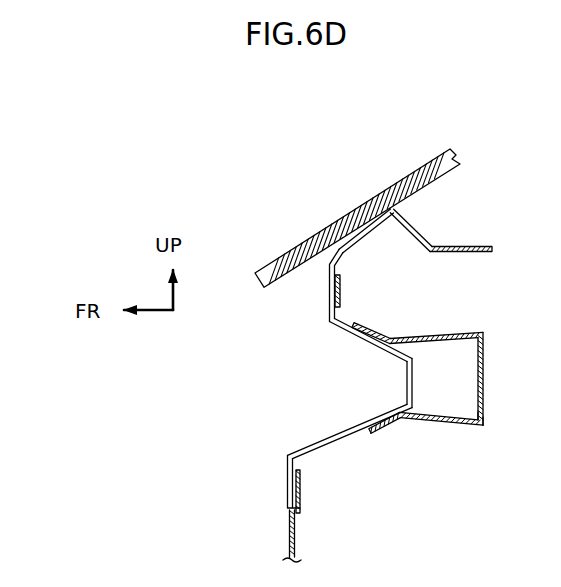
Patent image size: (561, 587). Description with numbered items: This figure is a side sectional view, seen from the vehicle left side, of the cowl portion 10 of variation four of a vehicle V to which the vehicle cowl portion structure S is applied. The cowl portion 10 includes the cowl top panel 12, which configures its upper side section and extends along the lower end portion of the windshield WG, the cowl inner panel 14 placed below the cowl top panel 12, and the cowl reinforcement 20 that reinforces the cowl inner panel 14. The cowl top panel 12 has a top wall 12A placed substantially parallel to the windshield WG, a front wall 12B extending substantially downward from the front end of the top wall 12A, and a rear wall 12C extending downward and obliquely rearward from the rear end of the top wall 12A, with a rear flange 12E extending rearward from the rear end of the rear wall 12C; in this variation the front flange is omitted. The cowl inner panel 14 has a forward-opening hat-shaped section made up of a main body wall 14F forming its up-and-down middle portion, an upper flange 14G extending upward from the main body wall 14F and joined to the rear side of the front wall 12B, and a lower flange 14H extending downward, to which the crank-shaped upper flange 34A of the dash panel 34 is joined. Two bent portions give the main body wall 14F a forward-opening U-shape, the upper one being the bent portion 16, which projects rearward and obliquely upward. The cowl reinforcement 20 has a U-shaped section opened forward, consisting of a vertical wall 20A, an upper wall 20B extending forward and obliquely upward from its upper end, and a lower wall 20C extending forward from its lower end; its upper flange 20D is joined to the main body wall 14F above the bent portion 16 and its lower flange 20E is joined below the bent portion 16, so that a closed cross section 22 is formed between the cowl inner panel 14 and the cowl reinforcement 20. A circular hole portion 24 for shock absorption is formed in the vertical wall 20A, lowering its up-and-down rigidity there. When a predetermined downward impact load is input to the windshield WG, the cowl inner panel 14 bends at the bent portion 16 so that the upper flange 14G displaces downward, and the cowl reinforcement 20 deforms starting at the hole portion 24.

The cowl portion 10 is at (209, 413).
The cowl top panel 12 is at (385, 237).
The top wall 12A is at (388, 236).
The front wall 12B is at (327, 282).
The rear wall 12C is at (424, 236).
The rear flange 12E is at (470, 246).
The cowl inner panel 14 is at (297, 387).
The main body wall 14F is at (404, 393).
The upper flange 14G is at (342, 292).
The lower flange 14H is at (291, 488).
The bent portion 16 is at (397, 367).
The cowl reinforcement 20 is at (455, 389).
The vertical wall 20A is at (484, 414).
The upper wall 20B is at (453, 335).
The lower wall 20C is at (442, 427).
The upper flange 20D is at (377, 333).
The lower flange 20E is at (388, 432).
The closed cross section 22 is at (462, 388).
The hole portion 24 is at (484, 360).
The dash panel 34 is at (296, 527).
The upper flange 34A is at (301, 483).
The vehicle V is at (310, 220).
The windshield WG is at (420, 172).
The vehicle cowl portion structure S is at (235, 372).